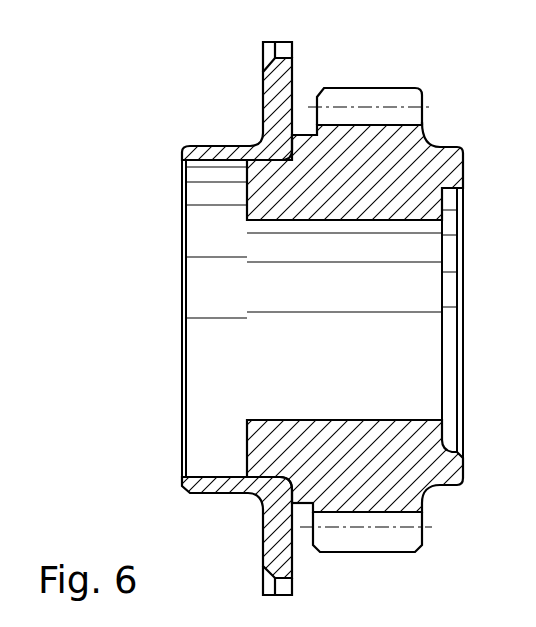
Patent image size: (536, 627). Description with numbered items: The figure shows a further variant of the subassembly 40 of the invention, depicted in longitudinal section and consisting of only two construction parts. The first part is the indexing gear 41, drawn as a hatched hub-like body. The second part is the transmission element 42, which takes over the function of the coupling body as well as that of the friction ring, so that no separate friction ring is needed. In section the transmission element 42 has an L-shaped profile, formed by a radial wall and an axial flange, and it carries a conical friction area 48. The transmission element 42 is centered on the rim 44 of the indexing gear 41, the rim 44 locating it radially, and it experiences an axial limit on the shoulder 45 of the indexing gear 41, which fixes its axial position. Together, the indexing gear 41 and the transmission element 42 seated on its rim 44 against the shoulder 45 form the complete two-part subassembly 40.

The subassembly 40 is at (298, 97).
The indexing gear 41 is at (411, 497).
The transmission element 42 is at (248, 121).
The rim 44 is at (270, 478).
The shoulder 45 is at (295, 504).
The conical friction area 48 is at (216, 494).